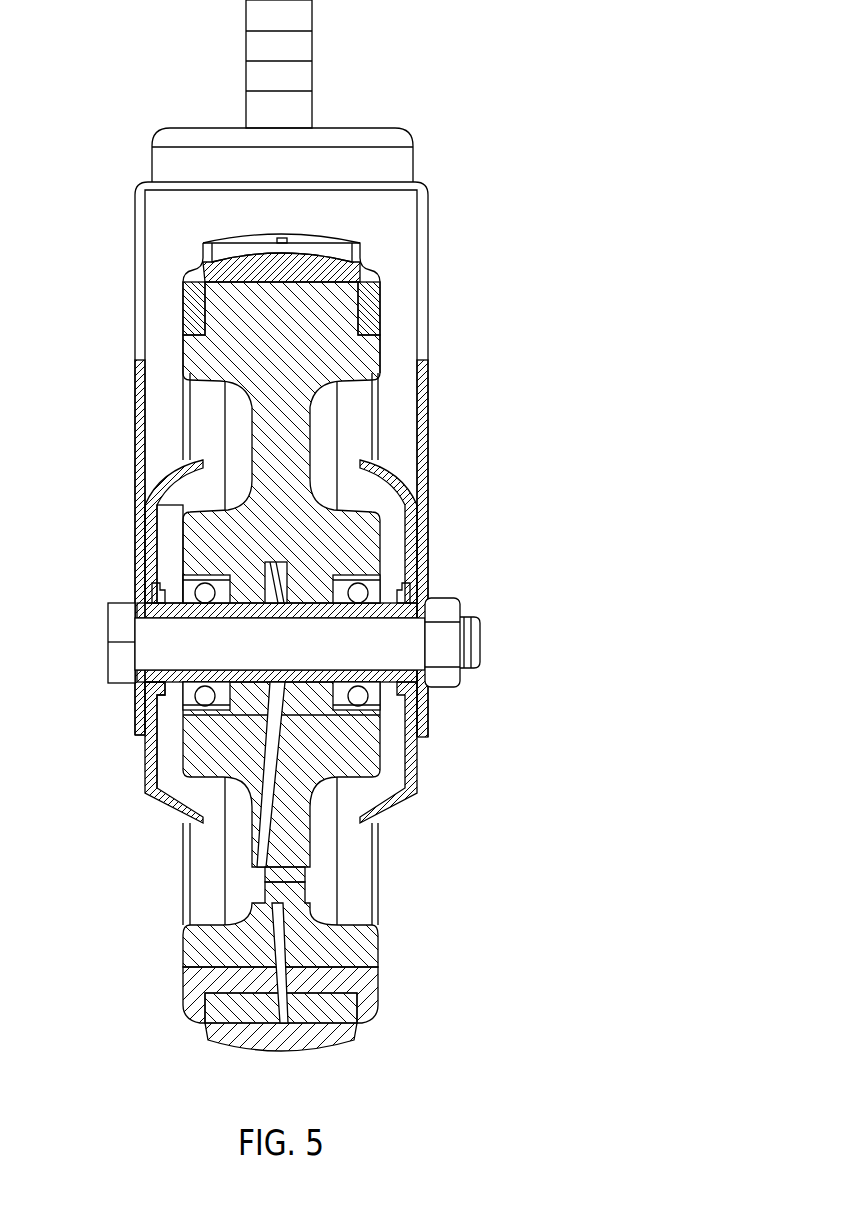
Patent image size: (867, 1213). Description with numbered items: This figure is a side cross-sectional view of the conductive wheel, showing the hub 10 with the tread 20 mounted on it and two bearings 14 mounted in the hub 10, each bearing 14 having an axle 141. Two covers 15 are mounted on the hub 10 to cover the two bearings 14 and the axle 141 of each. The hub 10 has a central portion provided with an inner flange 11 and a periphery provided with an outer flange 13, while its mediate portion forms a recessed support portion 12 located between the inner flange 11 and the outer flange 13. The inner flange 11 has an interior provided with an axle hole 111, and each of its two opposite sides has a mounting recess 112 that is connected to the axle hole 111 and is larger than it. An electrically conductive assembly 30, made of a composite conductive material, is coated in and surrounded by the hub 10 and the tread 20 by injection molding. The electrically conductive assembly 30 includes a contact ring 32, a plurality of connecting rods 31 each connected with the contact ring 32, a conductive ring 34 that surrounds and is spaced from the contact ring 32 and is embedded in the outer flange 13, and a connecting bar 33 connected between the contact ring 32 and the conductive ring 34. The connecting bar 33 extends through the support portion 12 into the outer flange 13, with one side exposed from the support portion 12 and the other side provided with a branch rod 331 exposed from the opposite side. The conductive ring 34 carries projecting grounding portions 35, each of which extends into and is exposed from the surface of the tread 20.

The hub 10 is at (384, 362).
The inner flange 11 is at (190, 565).
The axle hole 111 is at (235, 669).
The mounting recess 112 is at (426, 670).
The support portion 12 is at (300, 838).
The outer flange 13 is at (345, 1005).
The bearing 14 is at (405, 584).
The axle 141 is at (383, 677).
The cover 15 is at (408, 474).
The tread 20 is at (386, 305).
The electrically conductive assembly 30 is at (198, 776).
The connecting rod 31 is at (215, 740).
The contact ring 32 is at (277, 700).
The connecting bar 33 is at (258, 833).
The branch rod 331 is at (300, 874).
The conductive ring 34 is at (273, 1013).
The grounding portion 35 is at (282, 238).